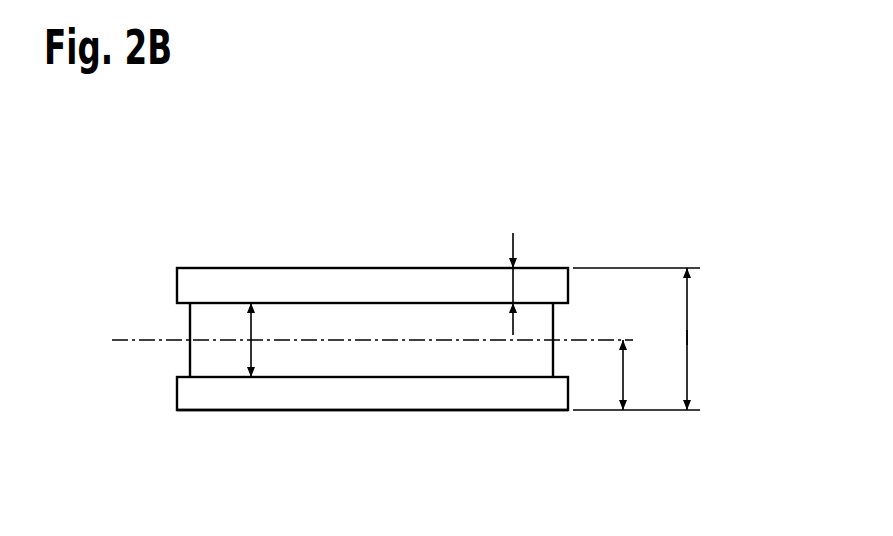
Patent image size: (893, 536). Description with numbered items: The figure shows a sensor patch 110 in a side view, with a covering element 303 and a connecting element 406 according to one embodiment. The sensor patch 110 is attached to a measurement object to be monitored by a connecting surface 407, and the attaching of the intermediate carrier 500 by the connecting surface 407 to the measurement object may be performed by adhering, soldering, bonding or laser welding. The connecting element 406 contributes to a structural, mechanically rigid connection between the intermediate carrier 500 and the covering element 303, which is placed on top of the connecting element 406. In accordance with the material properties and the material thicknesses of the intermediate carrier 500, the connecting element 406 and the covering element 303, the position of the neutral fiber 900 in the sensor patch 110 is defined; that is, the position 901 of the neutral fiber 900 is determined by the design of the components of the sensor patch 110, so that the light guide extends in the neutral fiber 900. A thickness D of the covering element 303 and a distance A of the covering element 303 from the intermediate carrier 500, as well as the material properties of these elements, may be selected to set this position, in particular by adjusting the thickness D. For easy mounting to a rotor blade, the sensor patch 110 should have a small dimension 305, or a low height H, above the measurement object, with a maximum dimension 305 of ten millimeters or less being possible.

The sensor patch 110 is at (183, 179).
The covering element 303 is at (295, 288).
The connecting element 406 is at (427, 317).
The thickness of the covering element D is at (513, 286).
The dimension 305 is at (687, 337).
The neutral fiber 900 is at (125, 340).
The position of the neutral fiber 901 is at (623, 370).
The distance of the covering element from the intermediate carrier A is at (252, 352).
The connecting surface 407 is at (323, 410).
The intermediate carrier 500 is at (497, 395).
The height H is at (636, 339).